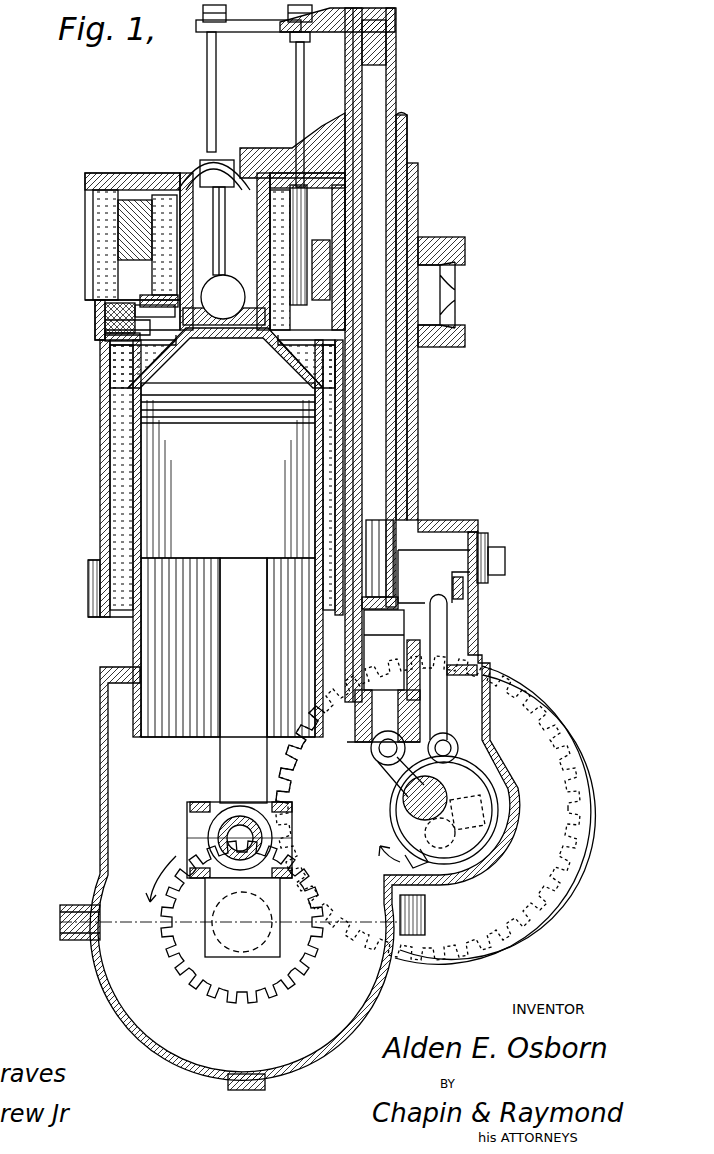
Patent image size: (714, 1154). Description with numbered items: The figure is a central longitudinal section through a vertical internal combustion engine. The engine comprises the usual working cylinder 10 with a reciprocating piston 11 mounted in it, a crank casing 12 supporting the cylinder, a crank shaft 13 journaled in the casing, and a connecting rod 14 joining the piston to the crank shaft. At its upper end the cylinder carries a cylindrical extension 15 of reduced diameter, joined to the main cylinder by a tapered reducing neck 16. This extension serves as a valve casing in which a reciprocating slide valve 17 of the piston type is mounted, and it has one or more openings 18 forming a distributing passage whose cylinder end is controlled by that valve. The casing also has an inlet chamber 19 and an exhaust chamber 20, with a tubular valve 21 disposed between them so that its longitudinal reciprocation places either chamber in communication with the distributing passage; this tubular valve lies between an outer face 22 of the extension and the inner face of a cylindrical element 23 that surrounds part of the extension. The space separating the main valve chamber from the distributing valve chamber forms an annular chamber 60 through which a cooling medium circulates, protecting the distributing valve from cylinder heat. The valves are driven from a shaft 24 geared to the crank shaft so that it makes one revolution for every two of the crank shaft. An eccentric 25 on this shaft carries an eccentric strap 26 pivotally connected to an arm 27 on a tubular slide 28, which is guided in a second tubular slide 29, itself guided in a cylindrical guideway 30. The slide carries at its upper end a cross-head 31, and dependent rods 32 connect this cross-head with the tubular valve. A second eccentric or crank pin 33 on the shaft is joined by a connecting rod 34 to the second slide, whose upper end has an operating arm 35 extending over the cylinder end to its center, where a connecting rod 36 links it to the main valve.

The working cylinder 10 is at (130, 472).
The reciprocating piston 11 is at (228, 560).
The crank casing 12 is at (100, 745).
The crank shaft 13 is at (272, 928).
The connecting rod 14 is at (258, 682).
The cylindrical extension 15 is at (178, 277).
The tapered reducing neck 16 is at (157, 353).
The reciprocating slide valve 17 is at (236, 326).
The openings 18 is at (122, 308).
The inlet chamber 19 is at (110, 322).
The exhaust chamber 20 is at (130, 220).
The tubular valve 21 is at (150, 300).
The outer face 22 is at (158, 292).
The cylindrical element 23 is at (112, 338).
The shaft 24 is at (447, 800).
The eccentric 25 is at (398, 828).
The eccentric strap 26 is at (473, 767).
The arm 27 is at (440, 642).
The tubular slide 28 is at (420, 462).
The second tubular slide 29 is at (406, 392).
The cylindrical guideway 30 is at (420, 222).
The cross-head 31 is at (254, 30).
The dependent rods 32 is at (296, 80).
The second eccentric or crank pin 33 is at (500, 858).
The connecting rod 34 is at (398, 768).
The operating arm 35 is at (266, 152).
The connecting rod 36 is at (222, 226).
The annular chamber 60 is at (157, 217).